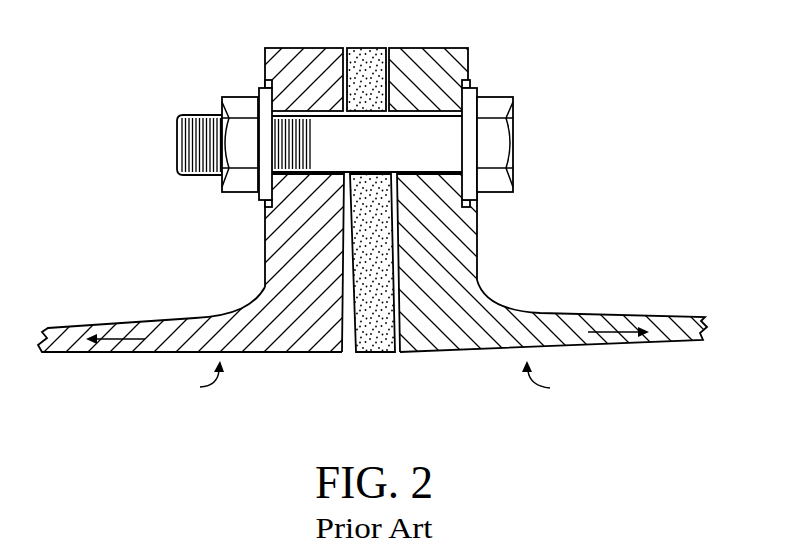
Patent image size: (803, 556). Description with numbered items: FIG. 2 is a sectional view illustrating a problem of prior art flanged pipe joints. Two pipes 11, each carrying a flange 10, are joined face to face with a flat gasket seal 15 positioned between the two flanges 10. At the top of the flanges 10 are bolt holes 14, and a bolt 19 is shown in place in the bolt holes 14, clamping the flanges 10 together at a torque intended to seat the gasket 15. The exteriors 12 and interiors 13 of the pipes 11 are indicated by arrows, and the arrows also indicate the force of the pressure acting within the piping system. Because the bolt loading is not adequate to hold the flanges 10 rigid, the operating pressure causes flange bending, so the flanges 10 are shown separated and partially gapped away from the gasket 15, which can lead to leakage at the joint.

The flange 10 is at (295, 238).
The pipe 11 is at (182, 322).
The exterior of pipe 12 is at (113, 286).
The interior of pipe 13 is at (373, 384).
The bolt hole 14 is at (292, 113).
The flat gasket seal 15 is at (378, 330).
The bolt 19 is at (430, 126).